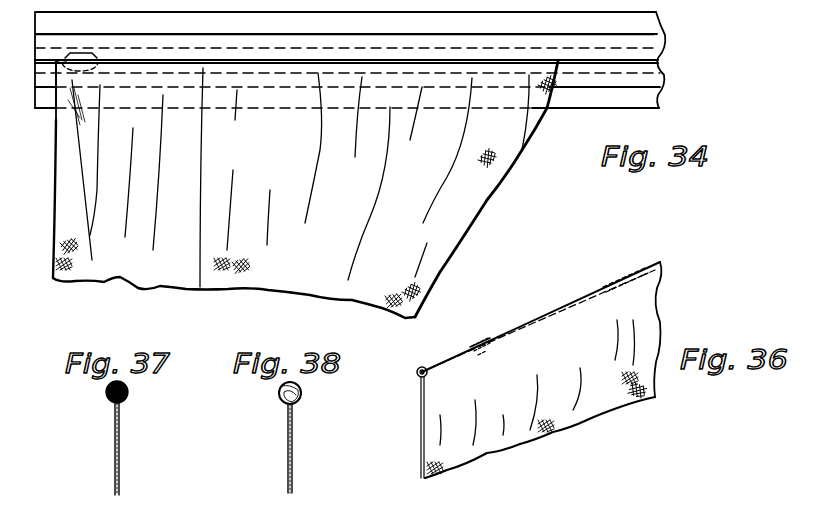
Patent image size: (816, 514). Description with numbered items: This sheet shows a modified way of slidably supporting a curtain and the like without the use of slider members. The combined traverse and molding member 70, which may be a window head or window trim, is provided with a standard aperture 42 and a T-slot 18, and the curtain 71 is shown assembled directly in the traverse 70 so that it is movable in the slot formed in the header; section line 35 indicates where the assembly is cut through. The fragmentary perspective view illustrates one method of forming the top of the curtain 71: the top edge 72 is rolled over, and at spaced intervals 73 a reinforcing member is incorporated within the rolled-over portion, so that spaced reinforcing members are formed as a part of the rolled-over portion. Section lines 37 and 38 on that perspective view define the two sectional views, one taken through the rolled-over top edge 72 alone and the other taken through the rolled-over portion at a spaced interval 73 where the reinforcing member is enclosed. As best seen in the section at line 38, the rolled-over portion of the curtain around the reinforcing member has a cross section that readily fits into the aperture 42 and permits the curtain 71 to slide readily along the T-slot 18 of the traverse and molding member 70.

In FIG. 34, the combined traverse and molding member 70 is at (640, 25).
In FIG. 34, the T-slot 18 is at (592, 60).
In FIG. 34, the standard aperture 42 is at (79, 52).
In FIG. 34, the section line 35 is at (236, 151).
In FIG. 34, the curtain 71 is at (474, 204).
In FIG. 37, the curtain 71 is at (120, 455).
In FIG. 38, the curtain 71 is at (293, 462).
In FIG. 36, the top edge 72 is at (441, 365).
In FIG. 37, the top edge 72 is at (128, 388).
In FIG. 36, the spaced intervals 73 is at (497, 340).
In FIG. 38, the spaced intervals 73 is at (302, 392).
In FIG. 36, the section line 37— 37 is at (588, 322).
In FIG. 36, the section line 38— 38 is at (522, 358).